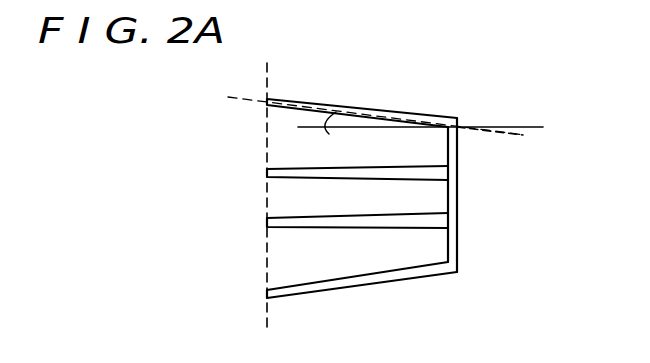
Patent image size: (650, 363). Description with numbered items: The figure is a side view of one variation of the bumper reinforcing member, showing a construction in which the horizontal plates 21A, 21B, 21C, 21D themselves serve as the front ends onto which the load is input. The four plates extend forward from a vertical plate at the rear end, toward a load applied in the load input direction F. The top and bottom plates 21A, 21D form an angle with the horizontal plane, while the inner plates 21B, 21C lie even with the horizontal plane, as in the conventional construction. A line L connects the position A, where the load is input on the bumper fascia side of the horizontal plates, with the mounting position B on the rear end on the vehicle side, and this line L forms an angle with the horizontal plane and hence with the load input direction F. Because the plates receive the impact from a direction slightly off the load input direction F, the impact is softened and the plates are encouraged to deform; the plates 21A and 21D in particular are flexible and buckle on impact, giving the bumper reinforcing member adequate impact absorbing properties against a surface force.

The horizontal plate 21A is at (320, 102).
The horizontal plate 21B is at (302, 175).
The horizontal plate 21C is at (302, 225).
The horizontal plate 21D is at (387, 280).
The load input position A is at (272, 100).
The mounting position B is at (455, 115).
The line L is at (498, 133).
The load input direction F is at (158, 195).